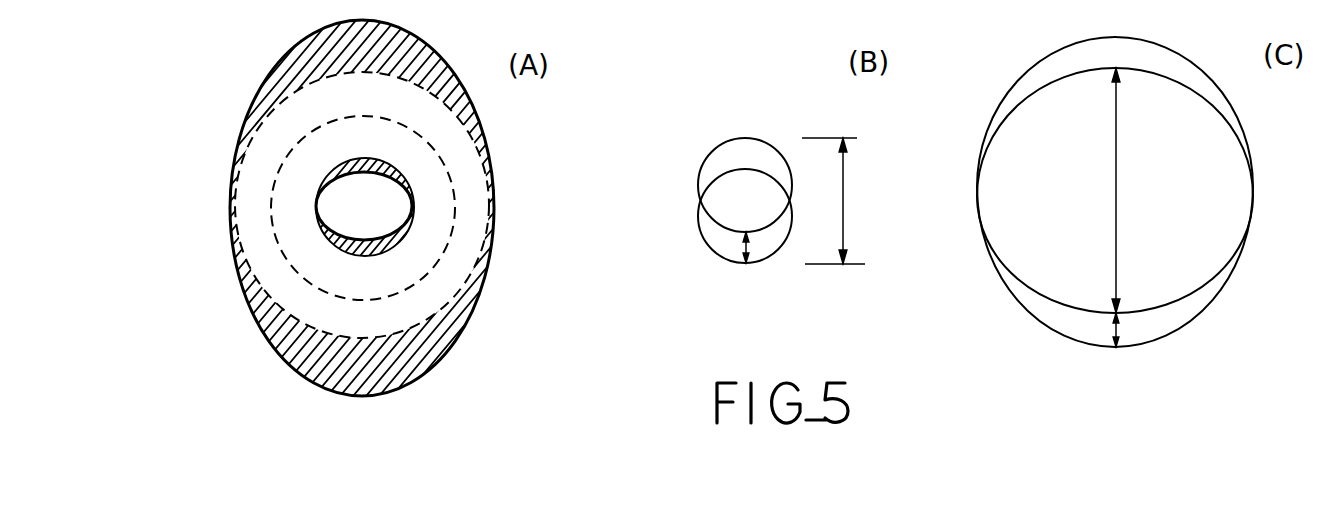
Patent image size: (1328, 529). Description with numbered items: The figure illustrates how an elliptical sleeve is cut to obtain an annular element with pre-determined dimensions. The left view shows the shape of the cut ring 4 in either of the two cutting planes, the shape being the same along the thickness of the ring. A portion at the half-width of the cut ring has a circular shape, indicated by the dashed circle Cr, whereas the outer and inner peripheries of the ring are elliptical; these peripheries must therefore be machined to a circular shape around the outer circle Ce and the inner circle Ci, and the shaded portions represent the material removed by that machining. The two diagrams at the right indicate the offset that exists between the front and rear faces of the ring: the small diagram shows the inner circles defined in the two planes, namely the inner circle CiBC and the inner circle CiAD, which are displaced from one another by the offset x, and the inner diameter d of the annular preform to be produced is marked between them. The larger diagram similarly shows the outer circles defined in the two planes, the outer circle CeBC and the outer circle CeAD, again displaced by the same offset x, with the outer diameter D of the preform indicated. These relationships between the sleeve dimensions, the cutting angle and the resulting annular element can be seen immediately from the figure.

The cut ring 4 is at (252, 93).
The inner circle Ci is at (383, 151).
The circle at half-width of the cut ring Cr is at (455, 207).
The outer circle Ce is at (462, 326).
The inner circle in plane BC CiBC is at (726, 138).
The inner circle in plane AD CiAD is at (708, 248).
The outer circle in plane BC CeBC is at (1170, 46).
The outer circle in plane AD CeAD is at (1193, 316).
The inner diameter d is at (835, 201).
The outer diameter D is at (1128, 190).
The offset x is at (930, 289).